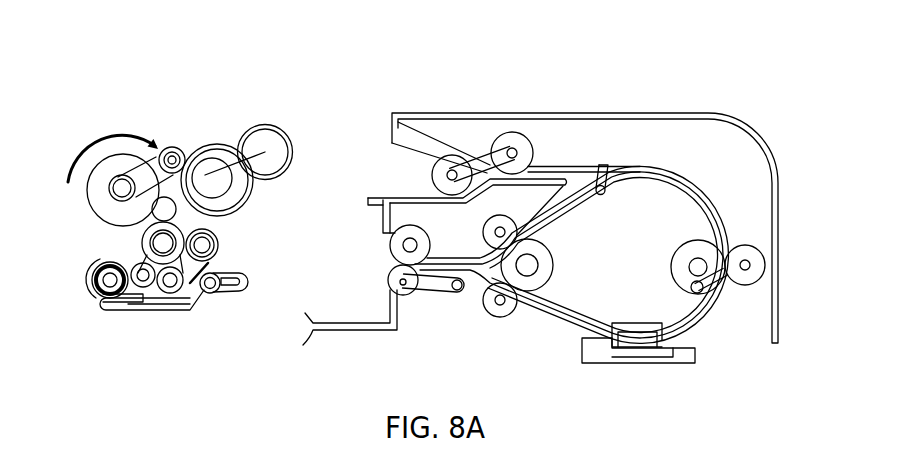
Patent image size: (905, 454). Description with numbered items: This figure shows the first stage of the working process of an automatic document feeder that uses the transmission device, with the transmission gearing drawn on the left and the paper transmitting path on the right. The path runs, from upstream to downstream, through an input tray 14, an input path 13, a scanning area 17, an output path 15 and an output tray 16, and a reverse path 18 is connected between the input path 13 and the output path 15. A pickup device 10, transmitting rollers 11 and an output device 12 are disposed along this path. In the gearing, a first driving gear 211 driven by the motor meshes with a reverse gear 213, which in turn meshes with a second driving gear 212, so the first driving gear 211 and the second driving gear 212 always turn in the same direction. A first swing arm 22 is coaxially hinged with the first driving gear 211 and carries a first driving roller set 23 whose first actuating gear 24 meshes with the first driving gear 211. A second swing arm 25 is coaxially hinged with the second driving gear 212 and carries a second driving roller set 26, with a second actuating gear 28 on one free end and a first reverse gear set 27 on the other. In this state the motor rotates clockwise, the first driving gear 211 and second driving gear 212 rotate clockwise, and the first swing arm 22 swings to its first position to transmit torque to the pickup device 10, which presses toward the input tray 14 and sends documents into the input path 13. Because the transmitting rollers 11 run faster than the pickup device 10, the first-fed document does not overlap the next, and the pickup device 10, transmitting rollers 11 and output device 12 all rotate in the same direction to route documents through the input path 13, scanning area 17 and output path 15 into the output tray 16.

The pickup device 10 is at (213, 158).
The transmitting rollers 11 is at (531, 282).
The output device 12 is at (93, 295).
The input path 13 is at (615, 173).
The input tray 14 is at (407, 194).
The output path 15 is at (482, 268).
The output tray 16 is at (306, 321).
The scanning area 17 is at (650, 340).
The reverse path 18 is at (540, 217).
The first swing arm 22 is at (150, 150).
The first driving roller set 23 is at (170, 147).
The first actuating gear 24 is at (181, 148).
The second swing arm 25 is at (222, 276).
The second driving roller set 26 is at (176, 288).
The first reverse gear set 27 is at (158, 287).
The second actuating gear 28 is at (218, 244).
The first driving gear 211 is at (102, 203).
The second driving gear 212 is at (143, 247).
The reverse gear 213 is at (152, 211).